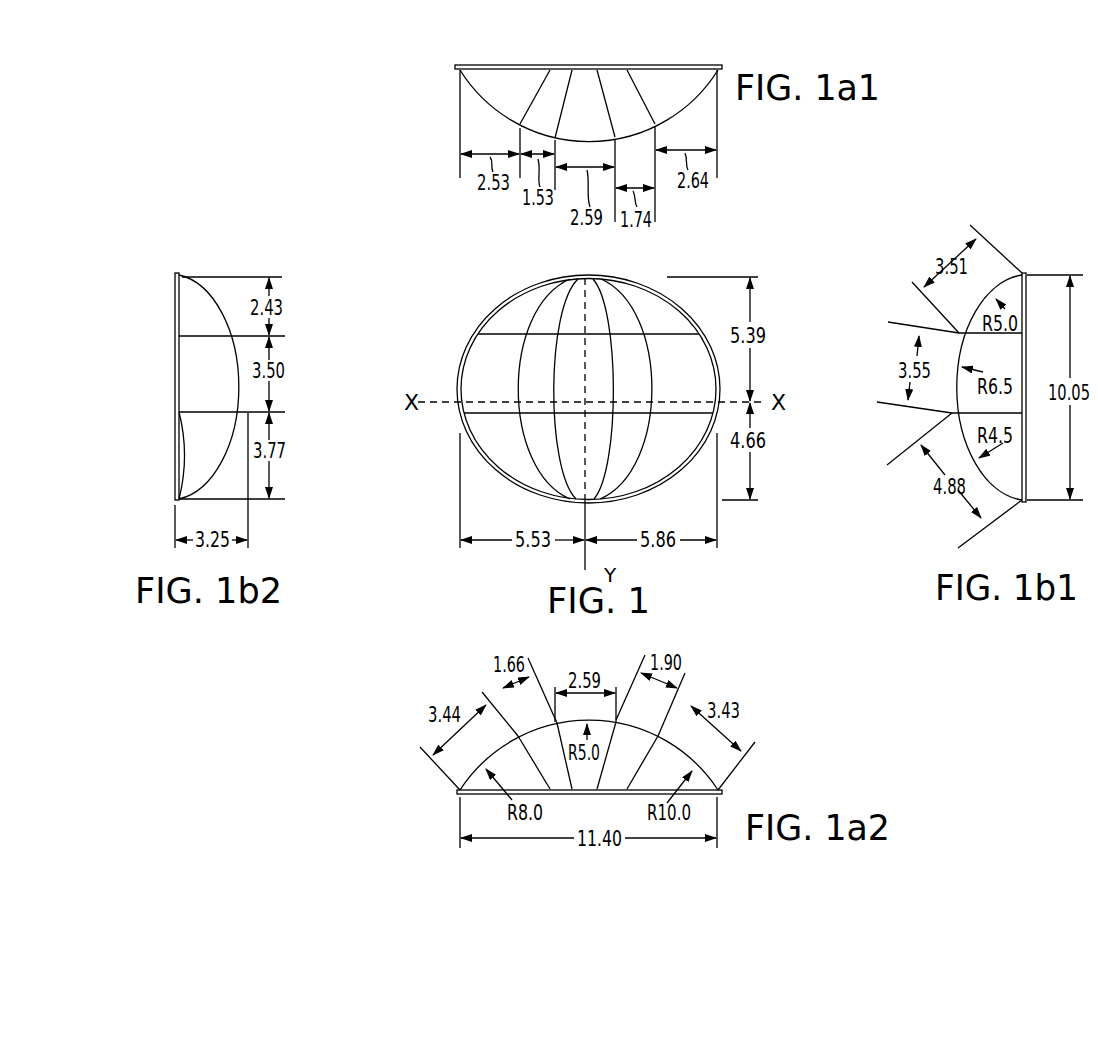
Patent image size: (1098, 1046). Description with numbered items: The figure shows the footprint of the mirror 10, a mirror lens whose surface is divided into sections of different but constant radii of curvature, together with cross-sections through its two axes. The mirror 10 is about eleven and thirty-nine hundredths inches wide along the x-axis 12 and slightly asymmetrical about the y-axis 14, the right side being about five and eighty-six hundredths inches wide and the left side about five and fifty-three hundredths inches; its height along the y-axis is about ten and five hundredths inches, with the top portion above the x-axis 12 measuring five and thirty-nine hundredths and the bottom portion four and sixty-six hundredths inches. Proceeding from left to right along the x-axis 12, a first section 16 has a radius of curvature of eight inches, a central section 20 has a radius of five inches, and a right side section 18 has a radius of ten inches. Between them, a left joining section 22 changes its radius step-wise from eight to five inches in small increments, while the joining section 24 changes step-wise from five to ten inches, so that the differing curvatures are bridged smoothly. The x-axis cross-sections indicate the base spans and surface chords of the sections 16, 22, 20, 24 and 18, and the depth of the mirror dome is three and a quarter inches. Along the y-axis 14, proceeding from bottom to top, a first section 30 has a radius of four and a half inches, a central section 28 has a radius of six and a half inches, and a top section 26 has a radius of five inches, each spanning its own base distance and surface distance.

In FIG. 1, the mirror 10 is at (478, 322).
In FIG. 1, the x-axis 12 is at (443, 404).
In FIG. 1, the y-axis 14 is at (583, 556).
In FIG. 1, the first section 16 is at (490, 440).
In FIG. 1, the right side section 18 is at (663, 457).
In FIG. 1, the central section 20 is at (594, 475).
In FIG. 1, the left joining section 22 is at (542, 453).
In FIG. 1, the joining section 24 is at (623, 455).
In FIG. 1b2, the top section 26 is at (188, 298).
In FIG. 1b2, the central section 28 is at (188, 392).
In FIG. 1b2, the first section 30 is at (188, 448).